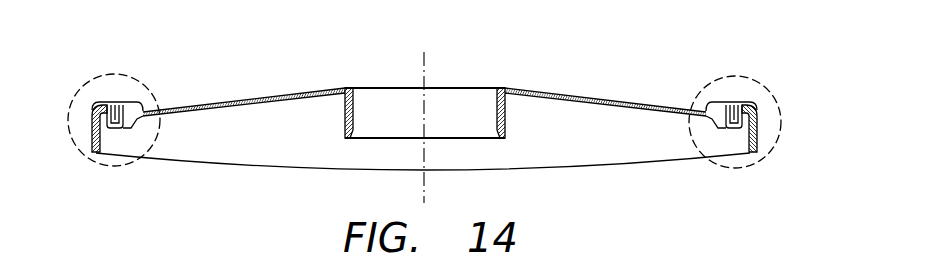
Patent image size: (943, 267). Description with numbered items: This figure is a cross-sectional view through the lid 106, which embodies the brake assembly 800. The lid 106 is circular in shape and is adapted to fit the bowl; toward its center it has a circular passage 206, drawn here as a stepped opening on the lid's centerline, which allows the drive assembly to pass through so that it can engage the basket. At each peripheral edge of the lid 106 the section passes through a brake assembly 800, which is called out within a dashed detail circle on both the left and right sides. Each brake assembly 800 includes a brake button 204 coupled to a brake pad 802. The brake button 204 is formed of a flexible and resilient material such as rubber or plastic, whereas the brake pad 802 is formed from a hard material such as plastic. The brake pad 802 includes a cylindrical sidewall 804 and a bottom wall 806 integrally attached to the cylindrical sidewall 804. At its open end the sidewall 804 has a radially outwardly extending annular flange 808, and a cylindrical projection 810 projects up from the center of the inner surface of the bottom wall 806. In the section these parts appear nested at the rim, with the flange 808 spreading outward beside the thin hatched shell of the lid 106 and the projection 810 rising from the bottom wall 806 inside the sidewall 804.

The brake assembly 800 is at (94, 86).
The lid 106 is at (245, 100).
The circular passage 206 is at (395, 100).
The annular flange 808 is at (745, 100).
The cylindrical projection 810 is at (730, 103).
The brake button 204 is at (757, 110).
The cylindrical sidewall 804 is at (758, 114).
The brake pad 802 is at (738, 143).
The bottom wall 806 is at (730, 130).